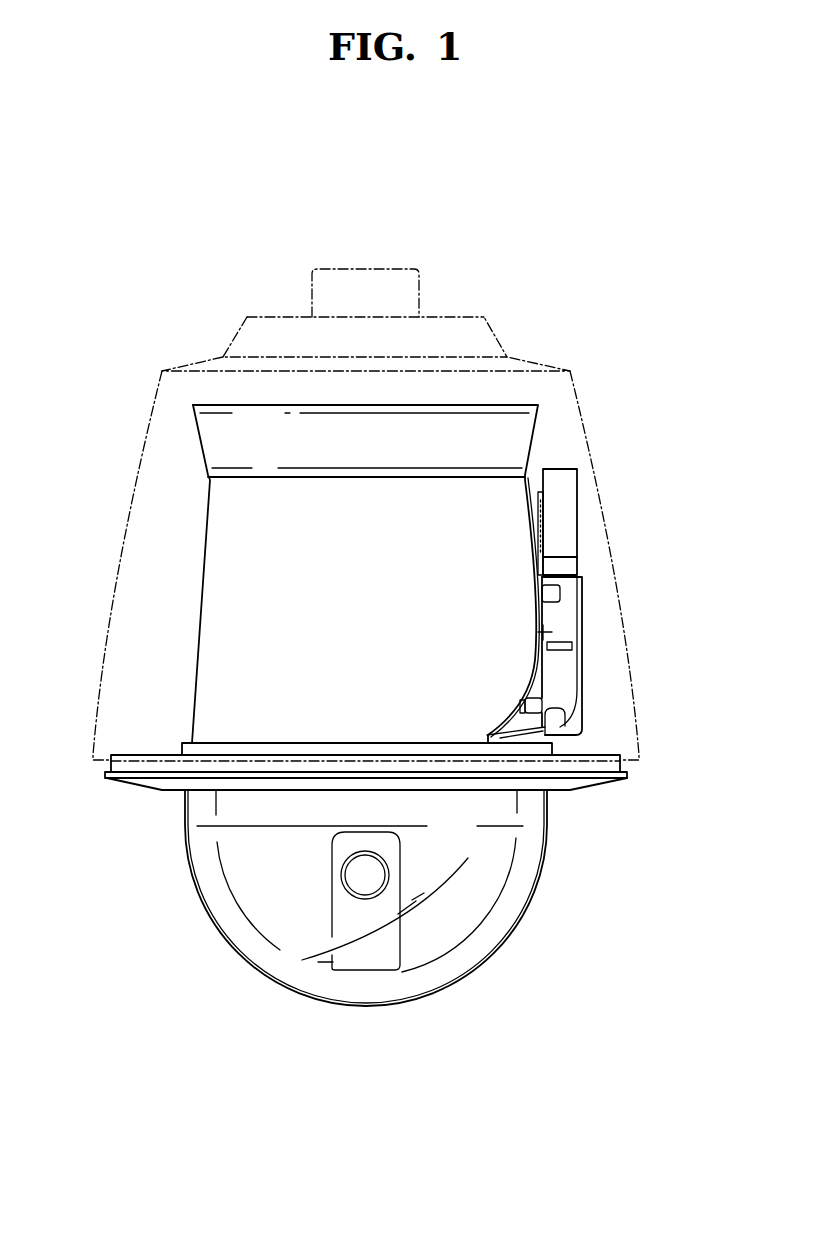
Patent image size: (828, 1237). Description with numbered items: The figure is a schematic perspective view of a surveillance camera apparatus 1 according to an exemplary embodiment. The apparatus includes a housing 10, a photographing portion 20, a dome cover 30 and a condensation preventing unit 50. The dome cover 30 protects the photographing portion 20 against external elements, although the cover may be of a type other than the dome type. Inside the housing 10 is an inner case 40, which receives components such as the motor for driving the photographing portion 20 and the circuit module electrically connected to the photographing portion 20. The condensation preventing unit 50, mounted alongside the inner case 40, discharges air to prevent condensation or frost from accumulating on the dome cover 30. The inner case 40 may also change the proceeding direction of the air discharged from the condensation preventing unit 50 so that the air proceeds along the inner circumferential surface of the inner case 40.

The surveillance camera apparatus 1 is at (525, 262).
The housing 10 is at (142, 442).
The photographing portion 20 is at (227, 880).
The dome cover 30 is at (252, 967).
The inner case 40 is at (197, 628).
The condensation preventing unit 50 is at (590, 546).